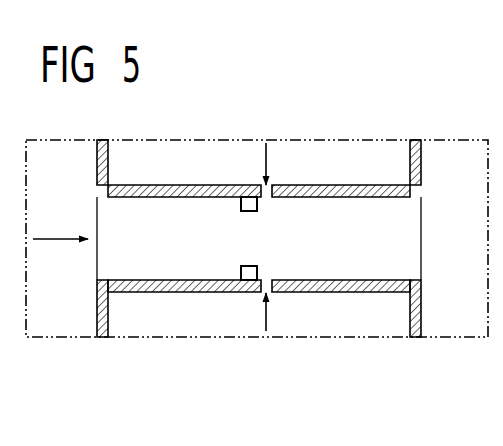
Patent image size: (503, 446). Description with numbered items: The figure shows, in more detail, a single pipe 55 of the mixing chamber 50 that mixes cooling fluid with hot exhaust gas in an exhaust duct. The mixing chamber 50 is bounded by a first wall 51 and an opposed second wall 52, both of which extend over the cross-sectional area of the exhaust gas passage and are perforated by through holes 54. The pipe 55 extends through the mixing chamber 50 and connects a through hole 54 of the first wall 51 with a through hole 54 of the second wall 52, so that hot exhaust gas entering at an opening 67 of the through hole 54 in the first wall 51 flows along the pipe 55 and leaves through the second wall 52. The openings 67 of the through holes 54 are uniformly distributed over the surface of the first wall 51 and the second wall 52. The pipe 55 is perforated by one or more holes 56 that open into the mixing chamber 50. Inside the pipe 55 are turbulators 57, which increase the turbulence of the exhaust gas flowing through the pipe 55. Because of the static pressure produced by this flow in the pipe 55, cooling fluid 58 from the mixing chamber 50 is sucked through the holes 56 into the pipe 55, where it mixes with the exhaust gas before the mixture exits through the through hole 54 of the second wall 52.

The mixing chamber 50 is at (185, 176).
The first wall 51 is at (101, 163).
The second wall 52 is at (417, 160).
The through holes 54 is at (100, 218).
The pipe 55 is at (364, 198).
The holes 56 is at (267, 279).
The turbulators 57 is at (242, 204).
The cooling fluid 58 is at (267, 155).
The openings of the through holes 67 is at (97, 262).